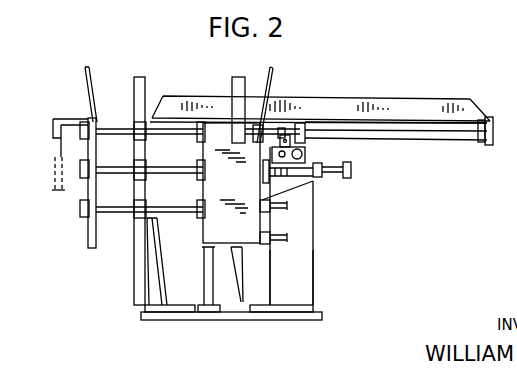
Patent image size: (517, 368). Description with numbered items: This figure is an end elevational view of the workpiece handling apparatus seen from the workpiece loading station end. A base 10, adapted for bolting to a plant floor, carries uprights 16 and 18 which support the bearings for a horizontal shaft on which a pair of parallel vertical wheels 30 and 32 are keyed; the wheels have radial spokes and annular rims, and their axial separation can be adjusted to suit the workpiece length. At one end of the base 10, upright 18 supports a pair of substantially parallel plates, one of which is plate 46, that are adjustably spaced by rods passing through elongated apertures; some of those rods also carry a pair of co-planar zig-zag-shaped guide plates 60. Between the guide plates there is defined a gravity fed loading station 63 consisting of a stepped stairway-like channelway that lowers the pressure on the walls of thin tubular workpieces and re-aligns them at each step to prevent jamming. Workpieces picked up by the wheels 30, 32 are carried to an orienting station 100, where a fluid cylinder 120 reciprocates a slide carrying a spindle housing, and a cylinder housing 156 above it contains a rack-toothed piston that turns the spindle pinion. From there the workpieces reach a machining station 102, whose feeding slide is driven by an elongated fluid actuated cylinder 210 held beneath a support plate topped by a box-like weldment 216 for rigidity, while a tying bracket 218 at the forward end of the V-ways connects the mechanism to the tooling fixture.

The base 10 is at (168, 319).
The upright 16 is at (210, 272).
The upright 18 is at (262, 283).
The vertical wheel 30 is at (138, 292).
The vertical wheel 32 is at (242, 307).
The plate 46 is at (87, 196).
The guide plates 60 is at (230, 87).
The gravity fed loading station 63 is at (108, 112).
The orienting station 100 is at (301, 197).
The machining station 102 is at (395, 97).
The fluid cylinder 120 is at (335, 177).
The cylinder housing 156 is at (300, 154).
The fluid actuated cylinder 210 is at (470, 139).
The box-like weldment 216 is at (463, 101).
The tying bracket 218 is at (55, 143).